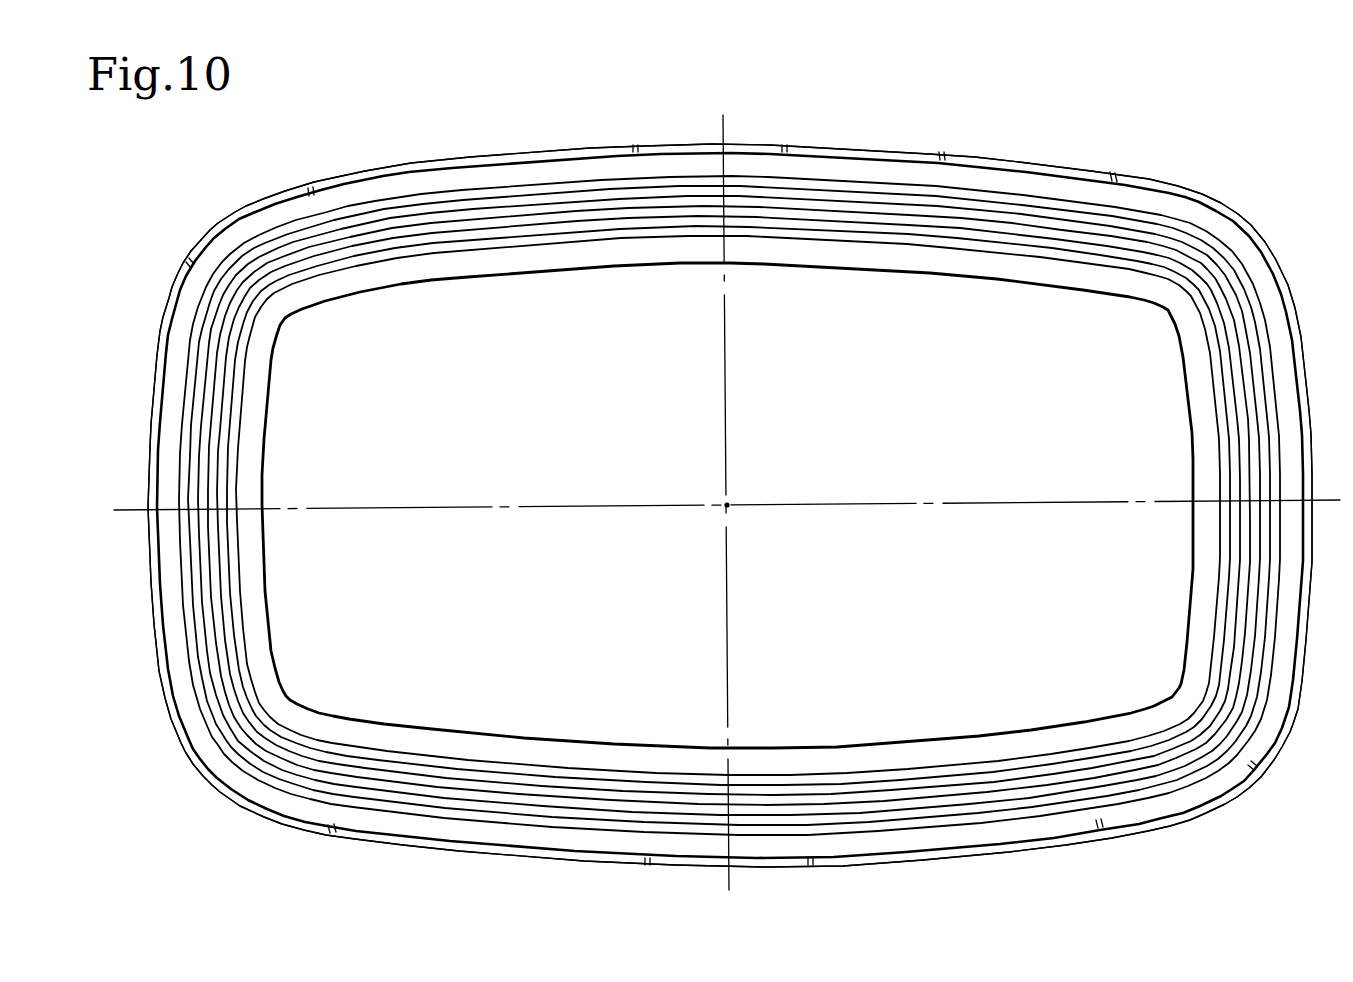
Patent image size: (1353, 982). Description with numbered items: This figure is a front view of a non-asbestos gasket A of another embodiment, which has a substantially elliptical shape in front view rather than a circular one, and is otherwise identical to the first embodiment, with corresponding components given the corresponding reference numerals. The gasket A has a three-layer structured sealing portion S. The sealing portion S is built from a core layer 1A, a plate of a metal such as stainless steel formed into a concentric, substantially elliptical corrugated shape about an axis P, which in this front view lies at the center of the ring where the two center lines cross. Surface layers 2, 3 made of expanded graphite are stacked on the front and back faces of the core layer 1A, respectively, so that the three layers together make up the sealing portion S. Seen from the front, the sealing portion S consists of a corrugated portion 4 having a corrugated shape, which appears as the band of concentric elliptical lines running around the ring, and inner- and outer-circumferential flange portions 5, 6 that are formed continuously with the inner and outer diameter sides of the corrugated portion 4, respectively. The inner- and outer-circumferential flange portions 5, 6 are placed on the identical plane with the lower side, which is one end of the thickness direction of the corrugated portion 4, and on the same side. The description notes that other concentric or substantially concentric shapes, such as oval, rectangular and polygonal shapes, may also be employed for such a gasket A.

The core layer 1A is at (161, 349).
The surface layer 2 is at (745, 481).
The surface layer 3 is at (1232, 238).
The corrugated portion 4 is at (467, 795).
The inner-circumferential flange portion 5 is at (990, 735).
The outer-circumferential flange portion 6 is at (160, 587).
The sealing portion S is at (553, 198).
The non-asbestos gasket A is at (1143, 163).
The axis P is at (727, 504).